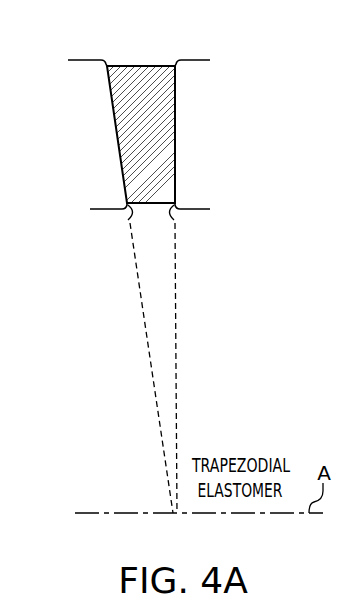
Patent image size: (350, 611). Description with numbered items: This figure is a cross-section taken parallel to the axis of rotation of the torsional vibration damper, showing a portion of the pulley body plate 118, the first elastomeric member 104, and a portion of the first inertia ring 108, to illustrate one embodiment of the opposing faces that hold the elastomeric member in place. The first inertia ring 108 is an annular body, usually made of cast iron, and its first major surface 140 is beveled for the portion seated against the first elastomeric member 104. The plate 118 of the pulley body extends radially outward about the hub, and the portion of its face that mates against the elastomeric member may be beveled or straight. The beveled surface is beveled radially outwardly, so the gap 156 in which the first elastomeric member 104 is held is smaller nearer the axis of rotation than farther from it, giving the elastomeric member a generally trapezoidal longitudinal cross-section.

The first elastomeric member 104 is at (138, 66).
The first inertia member 108 is at (75, 169).
The plate 118 is at (225, 169).
The first major surface 140 is at (128, 220).
The gap 156 is at (174, 220).